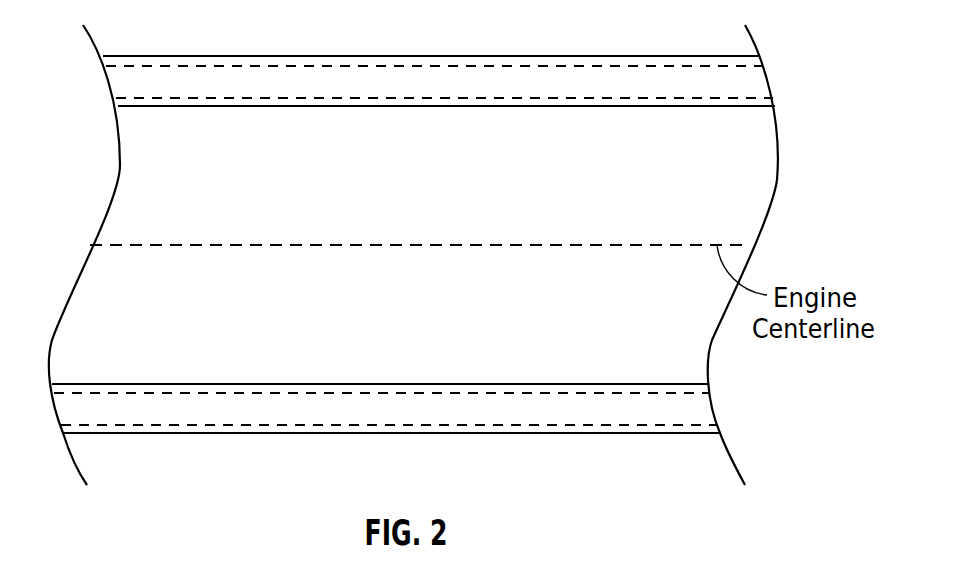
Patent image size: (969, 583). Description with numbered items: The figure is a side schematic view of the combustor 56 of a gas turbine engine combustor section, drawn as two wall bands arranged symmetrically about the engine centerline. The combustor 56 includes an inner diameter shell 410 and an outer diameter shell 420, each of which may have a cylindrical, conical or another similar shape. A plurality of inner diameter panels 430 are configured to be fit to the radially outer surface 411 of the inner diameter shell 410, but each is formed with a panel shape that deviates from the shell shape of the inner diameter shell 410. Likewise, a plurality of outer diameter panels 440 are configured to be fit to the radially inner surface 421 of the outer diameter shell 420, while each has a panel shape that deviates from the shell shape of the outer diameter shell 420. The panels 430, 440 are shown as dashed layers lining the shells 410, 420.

The combustor 56 is at (137, 198).
The inner diameter shell 410 is at (623, 107).
The radially outer surface 411 is at (283, 101).
The outer diameter shell 420 is at (205, 55).
The radially inner surface 421 is at (533, 57).
The inner diameter panels 430 is at (215, 98).
The outer diameter panels 440 is at (427, 66).